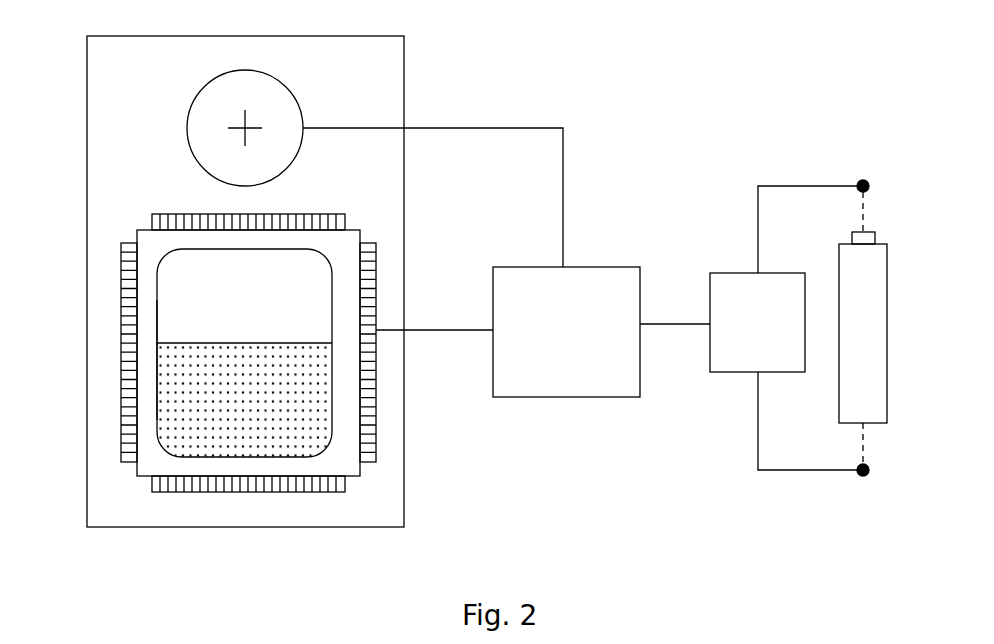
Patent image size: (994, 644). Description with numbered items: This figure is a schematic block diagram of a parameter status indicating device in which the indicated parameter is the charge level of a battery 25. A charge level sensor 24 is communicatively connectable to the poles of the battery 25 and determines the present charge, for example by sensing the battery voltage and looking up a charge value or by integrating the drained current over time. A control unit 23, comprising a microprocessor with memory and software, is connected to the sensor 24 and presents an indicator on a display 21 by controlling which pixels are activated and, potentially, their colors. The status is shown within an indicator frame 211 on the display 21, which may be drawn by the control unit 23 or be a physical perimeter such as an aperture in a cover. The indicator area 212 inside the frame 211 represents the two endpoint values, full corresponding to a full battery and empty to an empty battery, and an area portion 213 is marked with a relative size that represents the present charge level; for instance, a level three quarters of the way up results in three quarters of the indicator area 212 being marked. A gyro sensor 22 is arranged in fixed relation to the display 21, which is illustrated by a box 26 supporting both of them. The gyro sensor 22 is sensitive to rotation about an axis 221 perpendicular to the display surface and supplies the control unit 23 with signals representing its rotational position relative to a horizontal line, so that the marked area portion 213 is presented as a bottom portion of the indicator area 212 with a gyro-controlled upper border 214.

The display 21 is at (166, 467).
The indicator frame 211 is at (160, 268).
The indicator area 212 is at (167, 372).
The area portion 213 is at (244, 400).
The upper border 214 is at (217, 342).
The gyro sensor 22 is at (187, 139).
The axis 221 is at (250, 120).
The control unit 23 is at (566, 332).
The charge level sensor 24 is at (757, 322).
The battery 25 is at (887, 405).
The box 26 is at (392, 82).